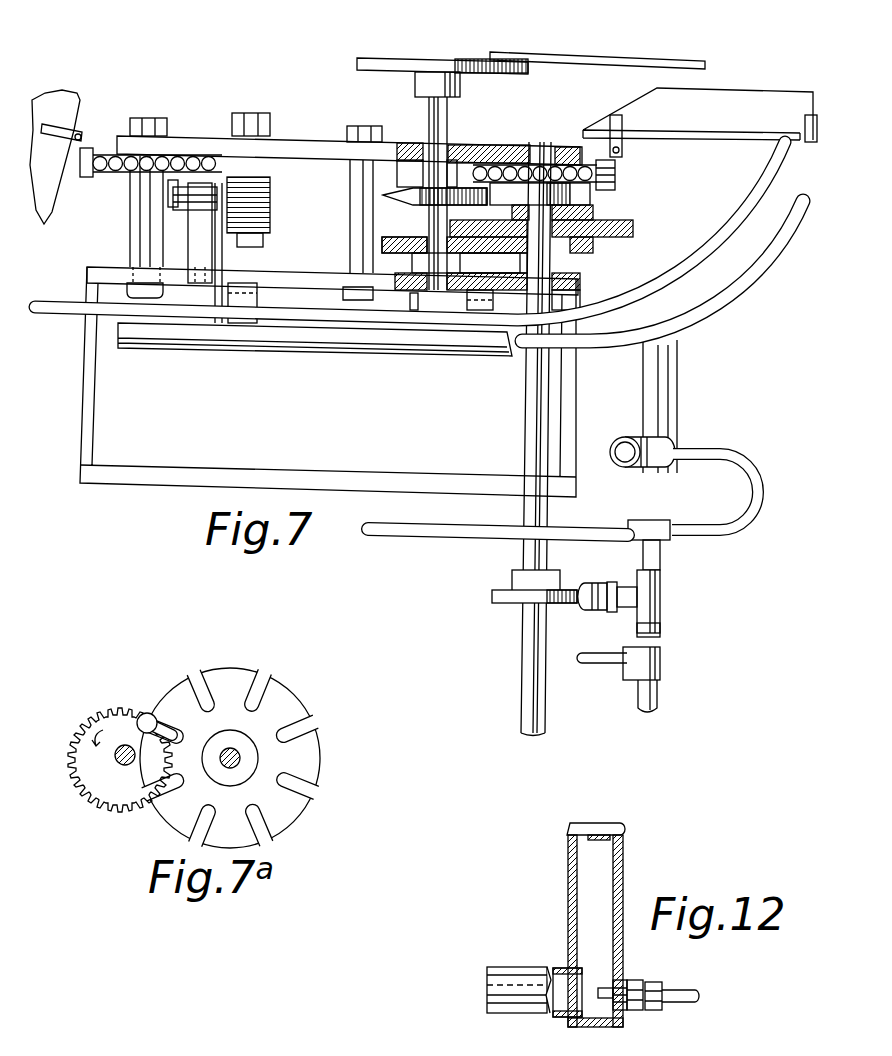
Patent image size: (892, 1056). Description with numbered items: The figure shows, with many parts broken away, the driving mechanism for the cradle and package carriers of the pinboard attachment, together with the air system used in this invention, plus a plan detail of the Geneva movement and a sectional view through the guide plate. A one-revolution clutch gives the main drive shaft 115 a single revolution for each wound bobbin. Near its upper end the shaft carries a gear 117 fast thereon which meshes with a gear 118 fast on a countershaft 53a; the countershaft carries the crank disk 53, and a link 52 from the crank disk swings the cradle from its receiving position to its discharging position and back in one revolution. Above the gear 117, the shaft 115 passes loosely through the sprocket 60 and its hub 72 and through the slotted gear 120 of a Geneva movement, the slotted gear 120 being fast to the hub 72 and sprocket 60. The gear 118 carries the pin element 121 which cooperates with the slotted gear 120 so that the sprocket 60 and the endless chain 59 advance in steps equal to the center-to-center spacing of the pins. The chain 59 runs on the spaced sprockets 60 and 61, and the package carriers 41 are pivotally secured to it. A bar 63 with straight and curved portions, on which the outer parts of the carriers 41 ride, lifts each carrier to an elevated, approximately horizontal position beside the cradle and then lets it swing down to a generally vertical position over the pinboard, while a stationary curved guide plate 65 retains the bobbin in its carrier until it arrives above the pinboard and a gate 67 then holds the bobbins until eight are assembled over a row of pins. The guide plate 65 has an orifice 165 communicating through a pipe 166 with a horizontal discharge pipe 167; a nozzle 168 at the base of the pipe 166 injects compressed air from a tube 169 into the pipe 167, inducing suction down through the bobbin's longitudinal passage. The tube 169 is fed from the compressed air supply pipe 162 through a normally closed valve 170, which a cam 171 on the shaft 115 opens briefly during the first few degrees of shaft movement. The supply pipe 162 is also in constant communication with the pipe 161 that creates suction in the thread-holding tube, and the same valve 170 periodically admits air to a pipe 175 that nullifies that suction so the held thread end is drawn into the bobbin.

In FIG. 7, the package carrier 41 is at (60, 116).
In FIG. 7, the link 52 is at (560, 42).
In FIG. 7, the crank disk 53 is at (368, 58).
In FIG. 7, the countershaft 53a is at (432, 112).
In FIG. 7A, the countershaft 53a is at (109, 761).
In FIG. 7, the endless chain 59 is at (98, 177).
In FIG. 7, the sprocket 60 is at (615, 173).
In FIG. 7, the sprocket 61 is at (112, 182).
In FIG. 7, the bar 63 is at (47, 312).
In FIG. 7, the curved guide plate 65 is at (728, 300).
In FIG. 12, the curved guide plate 65 is at (617, 830).
In FIG. 7, the gate 67 is at (293, 348).
In FIG. 7, the hub 72 is at (540, 193).
In FIG. 7, the main drive shaft 115 is at (532, 400).
In FIG. 7A, the main drive shaft 115 is at (240, 760).
In FIG. 7, the gear 117 is at (583, 258).
In FIG. 7, the gear 118 is at (383, 245).
In FIG. 7A, the gear 118 is at (83, 777).
In FIG. 7, the slotted gear 120 is at (645, 221).
In FIG. 7A, the slotted gear 120 is at (232, 677).
In FIG. 7, the pin element 121 is at (455, 215).
In FIG. 7A, the pin element 121 is at (146, 712).
In FIG. 7, the pipe 161 is at (590, 663).
In FIG. 7, the compressed air supply pipe 162 is at (643, 702).
In FIG. 12, the orifice 165 is at (602, 824).
In FIG. 7, the pipe 166 is at (663, 380).
In FIG. 12, the pipe 166 is at (620, 917).
In FIG. 7, the horizontal discharge pipe 167 is at (616, 470).
In FIG. 12, the horizontal discharge pipe 167 is at (517, 1007).
In FIG. 12, the nozzle 168 is at (612, 985).
In FIG. 7, the tube 169 is at (703, 452).
In FIG. 12, the tube 169 is at (677, 993).
In FIG. 7, the valve 170 is at (617, 607).
In FIG. 7, the cam 171 is at (560, 605).
In FIG. 7, the pipe 175 is at (412, 537).